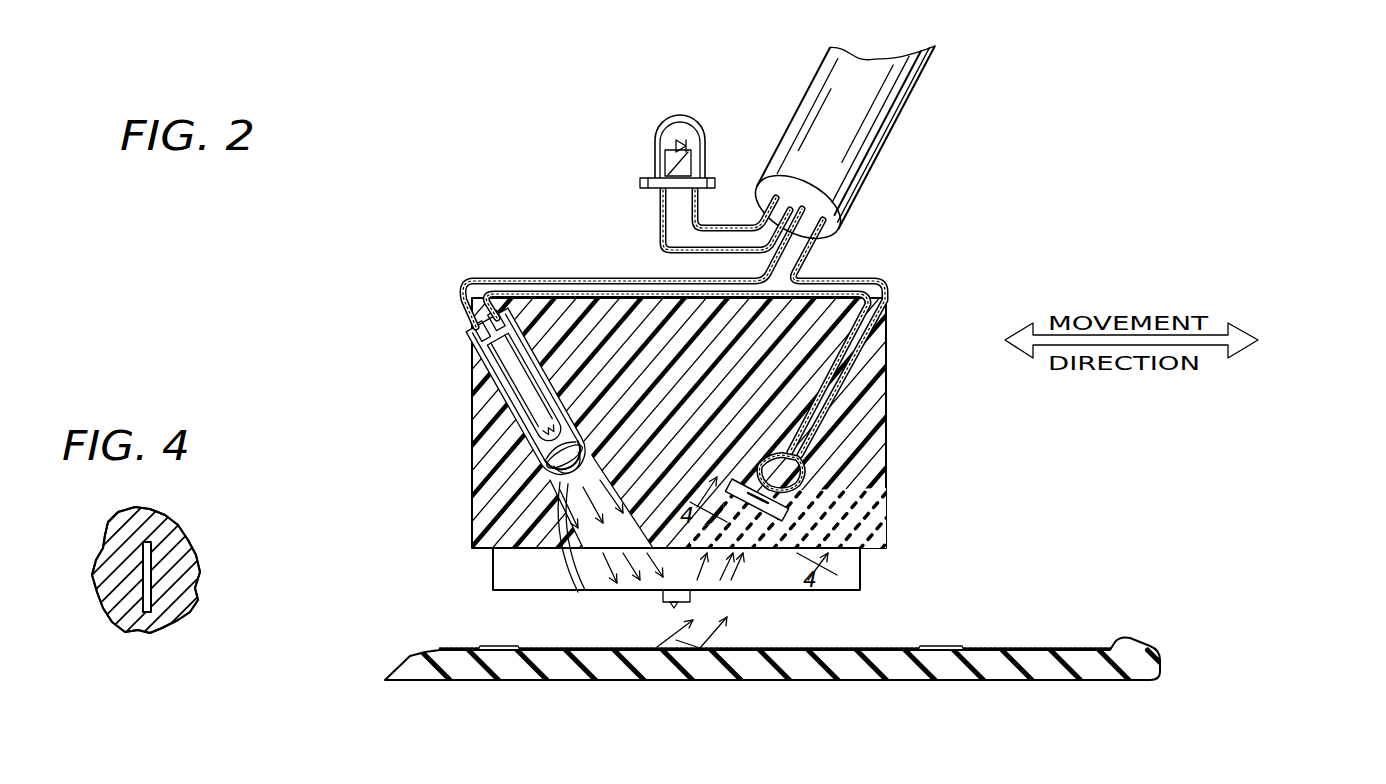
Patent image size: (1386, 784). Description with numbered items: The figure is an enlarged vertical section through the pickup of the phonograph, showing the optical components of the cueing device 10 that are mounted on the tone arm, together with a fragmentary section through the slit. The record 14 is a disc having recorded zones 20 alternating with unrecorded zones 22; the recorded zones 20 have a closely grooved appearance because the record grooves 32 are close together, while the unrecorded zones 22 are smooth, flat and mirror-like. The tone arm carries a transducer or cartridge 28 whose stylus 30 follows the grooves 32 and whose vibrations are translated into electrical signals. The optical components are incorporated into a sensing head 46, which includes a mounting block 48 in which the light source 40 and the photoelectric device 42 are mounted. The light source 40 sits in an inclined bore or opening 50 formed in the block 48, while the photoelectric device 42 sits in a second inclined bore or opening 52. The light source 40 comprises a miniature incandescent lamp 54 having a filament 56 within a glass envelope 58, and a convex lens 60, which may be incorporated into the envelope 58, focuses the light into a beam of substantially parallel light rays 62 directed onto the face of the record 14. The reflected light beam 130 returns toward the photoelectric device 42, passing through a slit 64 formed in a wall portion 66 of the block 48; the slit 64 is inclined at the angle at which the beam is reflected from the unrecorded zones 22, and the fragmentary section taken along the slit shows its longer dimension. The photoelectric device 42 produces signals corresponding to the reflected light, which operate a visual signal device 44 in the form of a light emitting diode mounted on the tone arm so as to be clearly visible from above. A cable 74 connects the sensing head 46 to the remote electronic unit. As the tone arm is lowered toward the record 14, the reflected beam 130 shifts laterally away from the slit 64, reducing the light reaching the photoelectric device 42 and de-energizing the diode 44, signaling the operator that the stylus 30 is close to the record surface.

In FIG. 2, the cueing device 10 is at (995, 239).
In FIG. 2, the record 14 is at (1158, 652).
In FIG. 2, the recorded zones 20 is at (577, 648).
In FIG. 2, the unrecorded zones 22 is at (497, 648).
In FIG. 2, the transducer or cartridge 28 is at (492, 572).
In FIG. 2, the stylus 30 is at (676, 640).
In FIG. 2, the record grooves 32 is at (741, 648).
In FIG. 2, the light source 40 is at (538, 398).
In FIG. 2, the photoelectric device 42 is at (775, 512).
In FIG. 2, the visual signal device 44 is at (652, 146).
In FIG. 2, the sensing head 46 is at (893, 370).
In FIG. 2, the mounting block 48 is at (888, 420).
In FIG. 4, the mounting block 48 is at (103, 524).
In FIG. 2, the inclined bore or opening 50 is at (567, 550).
In FIG. 2, the second inclined bore or opening 52 is at (886, 330).
In FIG. 2, the incandescent lamp 54 is at (490, 372).
In FIG. 2, the filament 56 is at (560, 475).
In FIG. 2, the glass envelope or enclosure 58 is at (522, 424).
In FIG. 2, the convex lens 60 is at (556, 478).
In FIG. 2, the light rays 62 is at (577, 592).
In FIG. 2, the slit 64 is at (748, 520).
In FIG. 4, the slit 64 is at (155, 570).
In FIG. 2, the wall portion 66 is at (752, 560).
In FIG. 4, the wall portion 66 is at (190, 610).
In FIG. 2, the cable 74 is at (923, 83).
In FIG. 2, the reflected light beam 130 is at (748, 578).